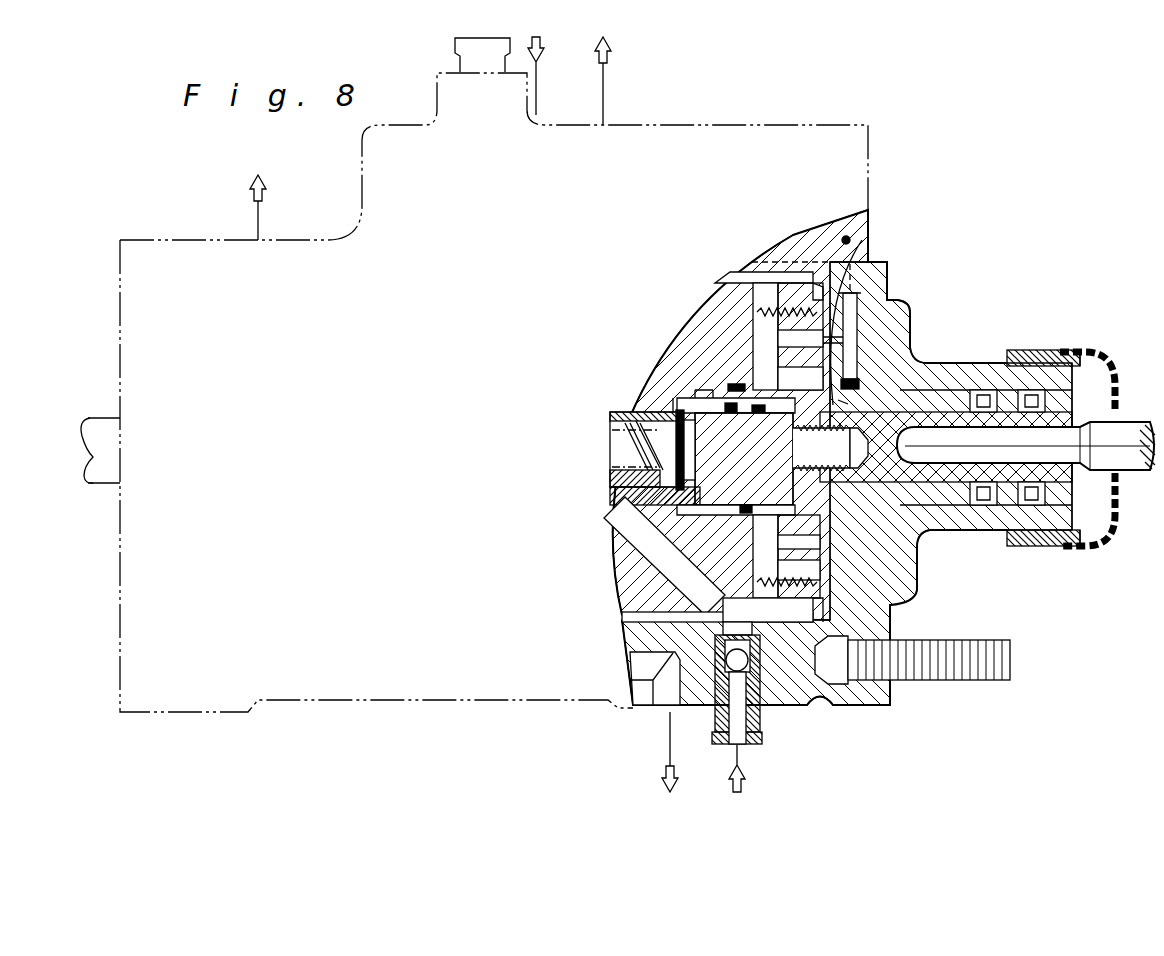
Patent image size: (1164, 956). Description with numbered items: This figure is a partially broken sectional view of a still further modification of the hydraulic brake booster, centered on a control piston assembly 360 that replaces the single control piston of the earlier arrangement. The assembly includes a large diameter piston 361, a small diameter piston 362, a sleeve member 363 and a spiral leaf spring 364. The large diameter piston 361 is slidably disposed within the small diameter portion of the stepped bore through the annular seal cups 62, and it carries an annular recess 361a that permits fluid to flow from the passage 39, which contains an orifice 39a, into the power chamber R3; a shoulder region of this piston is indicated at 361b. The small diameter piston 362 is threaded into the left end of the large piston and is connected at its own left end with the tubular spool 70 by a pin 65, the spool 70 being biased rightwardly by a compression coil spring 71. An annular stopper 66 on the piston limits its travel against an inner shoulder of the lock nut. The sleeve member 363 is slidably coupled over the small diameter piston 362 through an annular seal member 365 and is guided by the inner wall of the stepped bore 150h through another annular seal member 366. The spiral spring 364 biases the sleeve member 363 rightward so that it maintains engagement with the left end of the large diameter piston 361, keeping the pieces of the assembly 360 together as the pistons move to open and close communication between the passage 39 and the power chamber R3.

The passage 39 is at (858, 312).
The orifice 39a is at (850, 241).
The annular seal cups 62 is at (1047, 396).
The pin 65 is at (648, 450).
The annular stopper 66 is at (892, 557).
The tubular spool 70 is at (618, 478).
The compression coil spring 71 is at (645, 428).
The stepped bore 150h is at (690, 393).
The control piston assembly 360 is at (911, 398).
The large diameter piston 361 is at (960, 497).
The annular recess 361a is at (856, 332).
The shaft shoulder 361b is at (878, 365).
The small diameter piston 362 is at (700, 483).
The sleeve member 363 is at (733, 392).
The spiral leaf spring 364 is at (762, 482).
The annular seal member 365 is at (640, 505).
The annular seal member 366 is at (745, 386).
The power chamber R3 is at (785, 617).